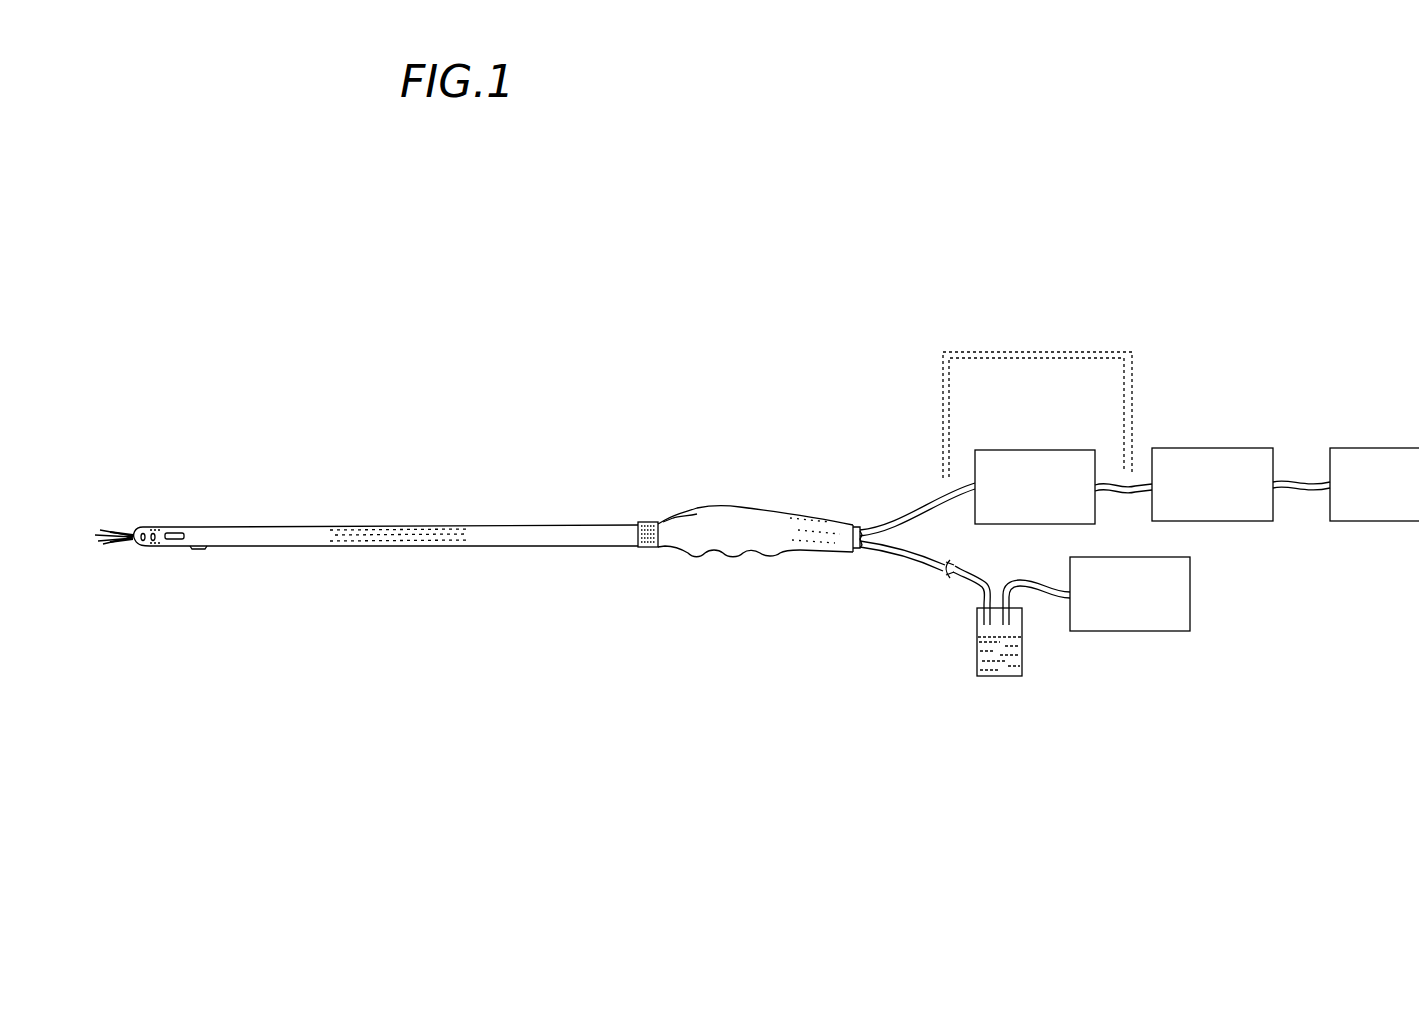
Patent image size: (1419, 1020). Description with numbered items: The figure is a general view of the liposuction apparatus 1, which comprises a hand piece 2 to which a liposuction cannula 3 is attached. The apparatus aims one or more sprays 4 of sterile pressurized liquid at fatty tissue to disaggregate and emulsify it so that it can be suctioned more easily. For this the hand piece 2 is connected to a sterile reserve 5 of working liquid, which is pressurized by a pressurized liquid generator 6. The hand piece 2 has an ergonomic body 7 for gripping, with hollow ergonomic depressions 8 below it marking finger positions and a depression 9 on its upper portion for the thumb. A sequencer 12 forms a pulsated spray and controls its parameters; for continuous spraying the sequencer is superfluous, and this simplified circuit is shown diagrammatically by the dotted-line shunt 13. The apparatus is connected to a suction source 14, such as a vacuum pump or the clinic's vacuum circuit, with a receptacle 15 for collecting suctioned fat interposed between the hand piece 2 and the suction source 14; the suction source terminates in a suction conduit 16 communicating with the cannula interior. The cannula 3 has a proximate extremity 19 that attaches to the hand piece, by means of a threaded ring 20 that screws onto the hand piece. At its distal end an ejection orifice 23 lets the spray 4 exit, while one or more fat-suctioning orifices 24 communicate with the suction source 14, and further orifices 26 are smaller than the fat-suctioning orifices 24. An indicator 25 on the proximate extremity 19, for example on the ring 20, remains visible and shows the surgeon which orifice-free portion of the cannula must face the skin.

The liposuction apparatus 1 is at (561, 722).
The hand piece 2 is at (713, 479).
The liposuction cannula 3 is at (399, 514).
The spray 4 is at (105, 550).
The sterile reserve 5 is at (1376, 448).
The pressurized liquid generator 6 is at (1213, 448).
The ergonomic body 7 is at (803, 557).
The hollow ergonomic depressions 8 is at (686, 557).
The depression 9 is at (690, 513).
The sequencer 12 is at (1035, 448).
The shunt 13 is at (1035, 352).
The suction source 14 is at (1128, 633).
The receptacle 15 is at (999, 678).
The suction conduit 16 is at (174, 584).
The proximate extremity 19 is at (564, 567).
The ring 20 is at (647, 551).
The ejection orifice 23 is at (132, 549).
The fat-suctioning orifices 24 is at (178, 529).
The indicator 25 is at (648, 523).
The orifices 26 is at (143, 527).